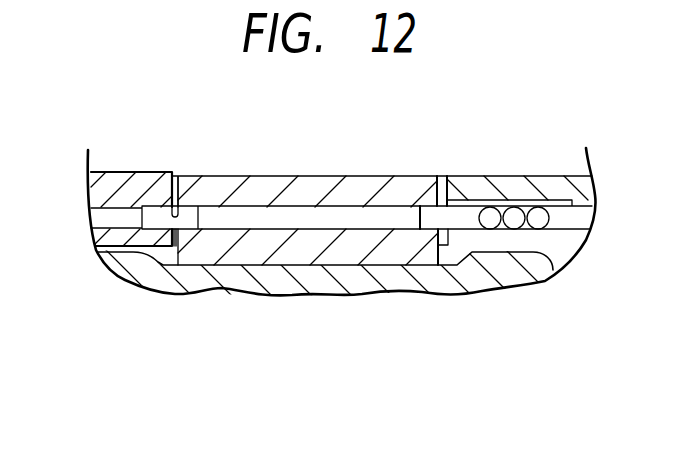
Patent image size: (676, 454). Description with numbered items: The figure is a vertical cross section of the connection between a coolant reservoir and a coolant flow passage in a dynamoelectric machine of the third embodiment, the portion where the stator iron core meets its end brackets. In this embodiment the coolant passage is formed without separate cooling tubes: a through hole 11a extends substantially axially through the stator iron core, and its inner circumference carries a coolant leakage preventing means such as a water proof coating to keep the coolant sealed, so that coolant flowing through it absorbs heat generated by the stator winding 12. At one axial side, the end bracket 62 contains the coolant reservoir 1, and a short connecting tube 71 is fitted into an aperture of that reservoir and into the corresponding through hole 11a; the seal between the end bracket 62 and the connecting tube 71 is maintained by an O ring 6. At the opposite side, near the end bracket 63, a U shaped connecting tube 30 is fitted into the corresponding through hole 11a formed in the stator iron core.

The coolant reservoir 1 is at (100, 216).
The O ring 6 is at (176, 205).
The through hole 11a is at (369, 206).
The stator winding 12 is at (218, 288).
The U shaped connecting tube 30 is at (465, 215).
The end bracket 62 is at (130, 176).
The end bracket 63 is at (523, 178).
The connecting tube 71 is at (190, 215).